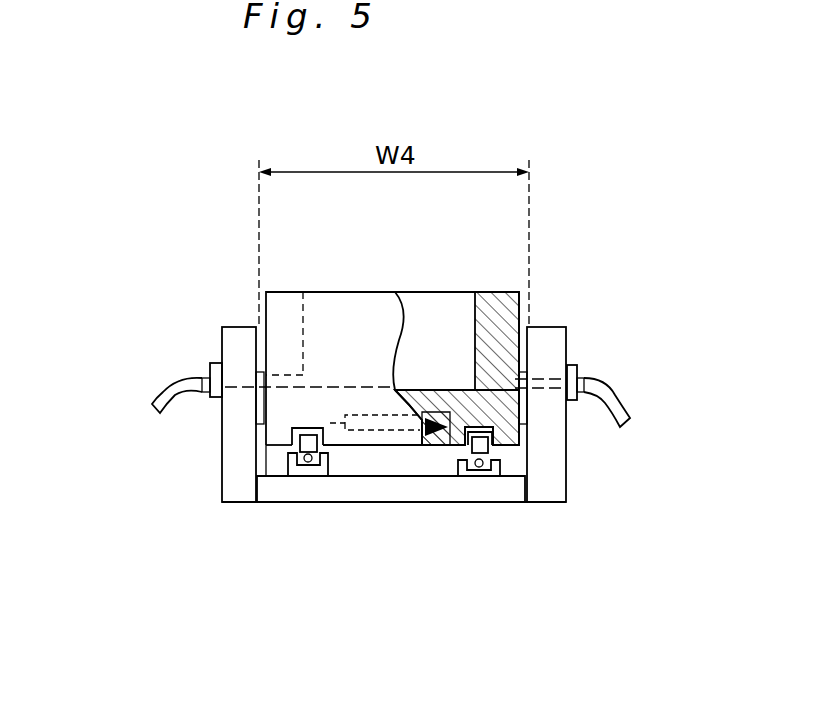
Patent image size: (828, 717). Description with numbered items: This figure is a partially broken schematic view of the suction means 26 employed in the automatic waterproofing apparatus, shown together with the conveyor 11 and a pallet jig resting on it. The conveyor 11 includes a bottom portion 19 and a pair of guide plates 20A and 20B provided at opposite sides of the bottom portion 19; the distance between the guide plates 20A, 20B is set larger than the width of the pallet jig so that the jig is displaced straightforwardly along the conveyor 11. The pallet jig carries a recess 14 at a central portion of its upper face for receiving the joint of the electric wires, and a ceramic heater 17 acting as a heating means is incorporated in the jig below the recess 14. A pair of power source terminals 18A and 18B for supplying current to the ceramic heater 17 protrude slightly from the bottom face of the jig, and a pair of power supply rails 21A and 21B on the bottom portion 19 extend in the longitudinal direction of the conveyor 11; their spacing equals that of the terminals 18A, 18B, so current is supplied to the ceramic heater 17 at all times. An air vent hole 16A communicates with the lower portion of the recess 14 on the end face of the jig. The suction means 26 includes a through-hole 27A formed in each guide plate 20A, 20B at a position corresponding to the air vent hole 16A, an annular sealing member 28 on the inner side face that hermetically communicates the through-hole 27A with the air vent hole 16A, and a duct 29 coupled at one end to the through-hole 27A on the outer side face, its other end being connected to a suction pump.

The conveyor 11 is at (238, 300).
The recess 14 is at (420, 318).
The air vent hole 16A is at (263, 357).
The ceramic heater 17 is at (432, 472).
The power source terminal 18A is at (300, 445).
The power source terminal 18B is at (488, 452).
The bottom portion 19 is at (492, 493).
The guide plate 20A is at (236, 487).
The guide plate 20B is at (552, 488).
The power supply rail 21A is at (313, 477).
The power supply rail 21B is at (478, 465).
The suction means 26 is at (592, 262).
The through-hole 27A is at (237, 382).
The annular sealing member 28 is at (258, 397).
The duct 29 is at (157, 390).